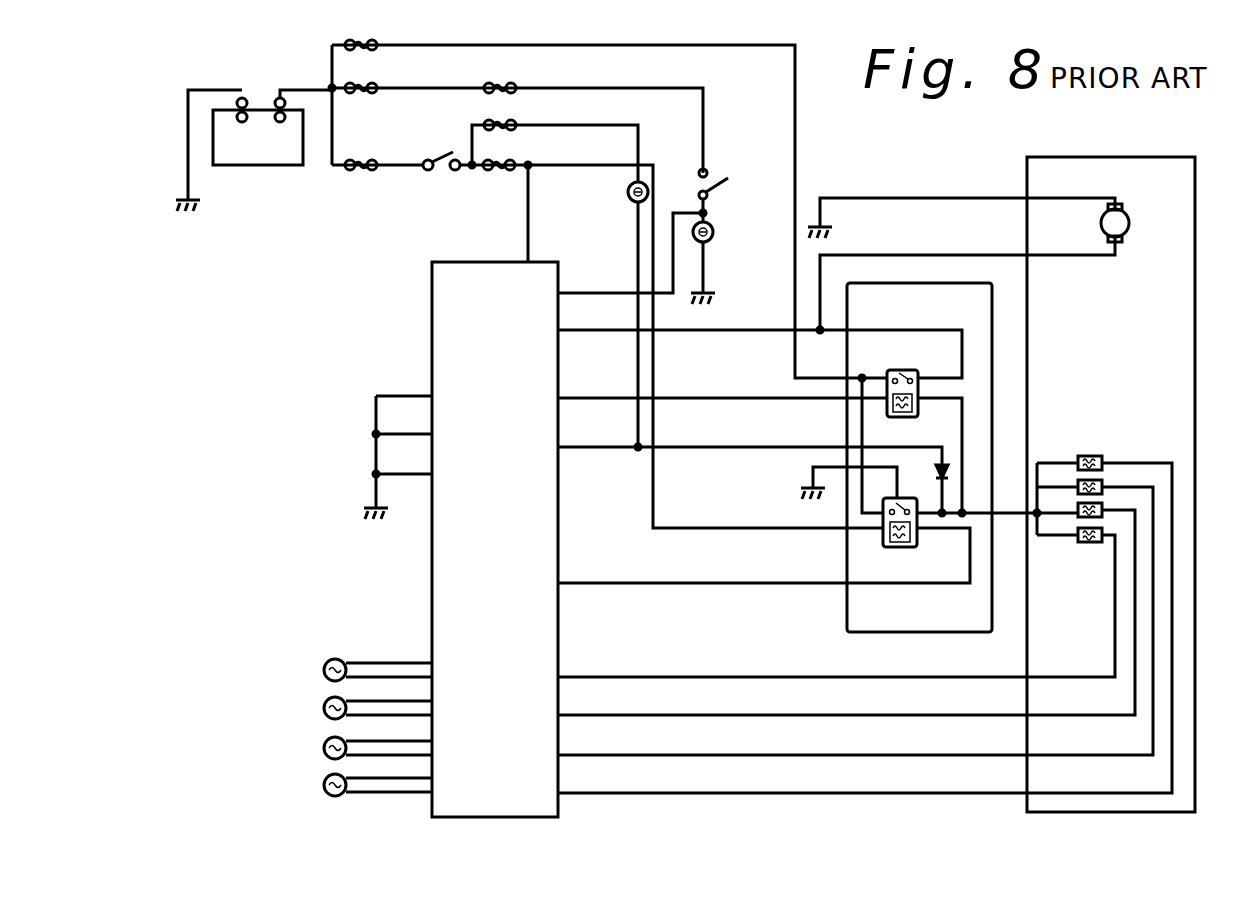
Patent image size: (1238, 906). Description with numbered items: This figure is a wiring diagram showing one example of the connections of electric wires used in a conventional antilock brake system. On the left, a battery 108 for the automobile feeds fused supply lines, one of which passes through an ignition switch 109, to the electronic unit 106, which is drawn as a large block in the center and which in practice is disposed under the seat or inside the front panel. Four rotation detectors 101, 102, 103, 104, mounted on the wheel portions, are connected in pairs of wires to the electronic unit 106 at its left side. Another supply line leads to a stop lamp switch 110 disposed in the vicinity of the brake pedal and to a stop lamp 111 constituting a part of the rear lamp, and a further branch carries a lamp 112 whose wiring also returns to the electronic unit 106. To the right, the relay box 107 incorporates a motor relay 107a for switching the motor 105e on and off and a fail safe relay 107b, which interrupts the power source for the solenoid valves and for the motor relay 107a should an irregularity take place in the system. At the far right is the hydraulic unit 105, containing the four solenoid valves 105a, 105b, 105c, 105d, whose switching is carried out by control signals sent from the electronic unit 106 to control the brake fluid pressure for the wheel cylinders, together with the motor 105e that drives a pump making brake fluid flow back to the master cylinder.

The rotation detector 101 is at (324, 662).
The rotation detector 102 is at (324, 703).
The rotation detector 103 is at (323, 748).
The rotation detector 104 is at (326, 794).
The hydraulic unit 105 is at (1027, 812).
The solenoid valve 105a is at (1102, 458).
The solenoid valve 105b is at (1103, 482).
The solenoid valve 105c is at (1077, 516).
The solenoid valve 105d is at (1082, 546).
The motor 105e is at (1117, 245).
The electronic unit 106 is at (561, 800).
The relay box 107 is at (882, 282).
The motor relay 107a is at (888, 370).
The fail safe relay 107b is at (903, 550).
The battery 108 is at (265, 167).
The ignition switch 109 is at (431, 170).
The stop lamp switch 110 is at (708, 190).
The stop lamp 111 is at (714, 232).
The warning lamp 112 is at (627, 191).